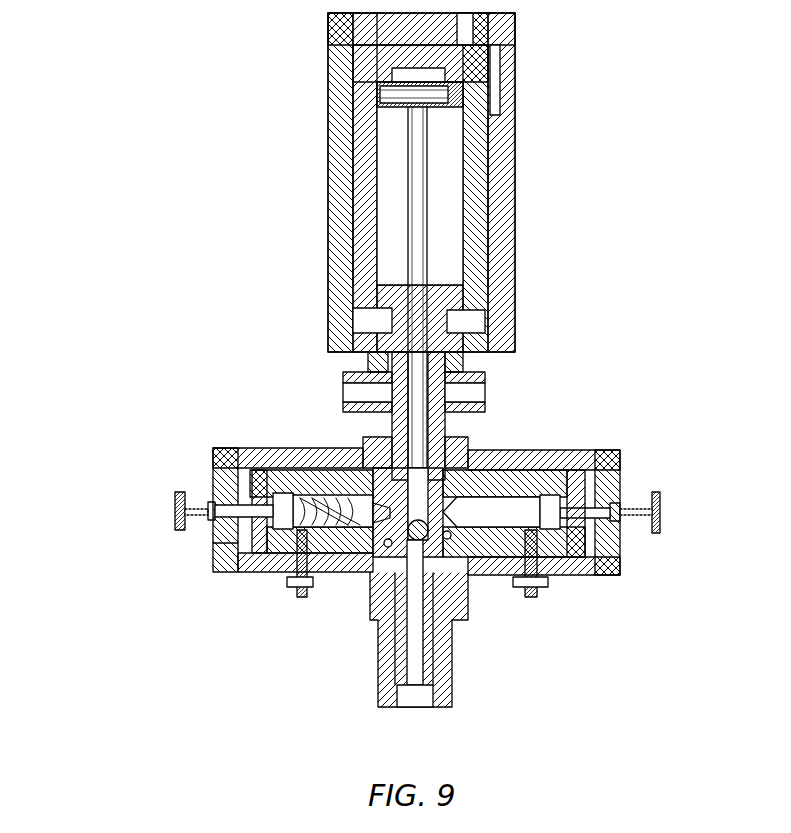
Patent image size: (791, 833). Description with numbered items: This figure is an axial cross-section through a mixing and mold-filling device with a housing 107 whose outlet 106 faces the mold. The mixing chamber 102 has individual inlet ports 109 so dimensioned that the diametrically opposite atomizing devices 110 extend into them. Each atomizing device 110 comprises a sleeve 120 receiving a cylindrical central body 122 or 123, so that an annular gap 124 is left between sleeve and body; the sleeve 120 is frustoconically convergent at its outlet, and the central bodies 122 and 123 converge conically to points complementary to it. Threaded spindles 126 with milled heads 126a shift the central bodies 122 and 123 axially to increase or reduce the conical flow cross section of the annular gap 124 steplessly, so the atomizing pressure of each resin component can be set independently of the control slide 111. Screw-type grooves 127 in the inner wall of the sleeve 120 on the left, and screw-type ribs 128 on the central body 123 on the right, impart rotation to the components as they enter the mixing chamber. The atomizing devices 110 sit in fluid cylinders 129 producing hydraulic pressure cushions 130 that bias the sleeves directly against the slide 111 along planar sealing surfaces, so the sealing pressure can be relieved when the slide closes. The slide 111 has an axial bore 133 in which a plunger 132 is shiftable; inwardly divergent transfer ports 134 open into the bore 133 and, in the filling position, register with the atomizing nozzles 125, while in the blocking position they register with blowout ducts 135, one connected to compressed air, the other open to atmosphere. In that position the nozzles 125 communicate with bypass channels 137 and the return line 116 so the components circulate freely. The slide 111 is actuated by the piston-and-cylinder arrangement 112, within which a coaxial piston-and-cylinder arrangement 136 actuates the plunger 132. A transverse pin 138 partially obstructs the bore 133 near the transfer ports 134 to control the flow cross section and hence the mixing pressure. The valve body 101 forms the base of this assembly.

The valve body 101 is at (297, 592).
The mixing chamber 102 is at (421, 704).
The outlet 106 is at (402, 707).
The housing 107 is at (462, 605).
The inlet ports 109 is at (393, 560).
The atomizing devices 110 is at (240, 448).
The control slide 111 is at (432, 638).
The piston-and-cylinder arrangement 112 is at (480, 222).
The return line 116 is at (343, 372).
The sleeve 120 is at (282, 493).
The central body 122 is at (300, 492).
The central body 123 is at (528, 470).
The annular gap 124 is at (322, 495).
The atomizing nozzles 125 is at (460, 470).
The threaded spindles 126 is at (188, 479).
The milled heads 126a is at (660, 512).
The screw-type grooves 127 is at (330, 578).
The screw-type ribs 128 is at (505, 535).
The fluid cylinders 129 is at (238, 575).
The hydraulic pressure cushions 130 is at (215, 455).
The plunger 132 is at (420, 282).
The bore 133 is at (416, 657).
The transfer ports 134 is at (372, 470).
The blowout ducts 135 is at (372, 550).
The piston-and-cylinder arrangement 136 is at (470, 104).
The bypass channels 137 is at (460, 400).
The transverse pin 138 is at (460, 603).